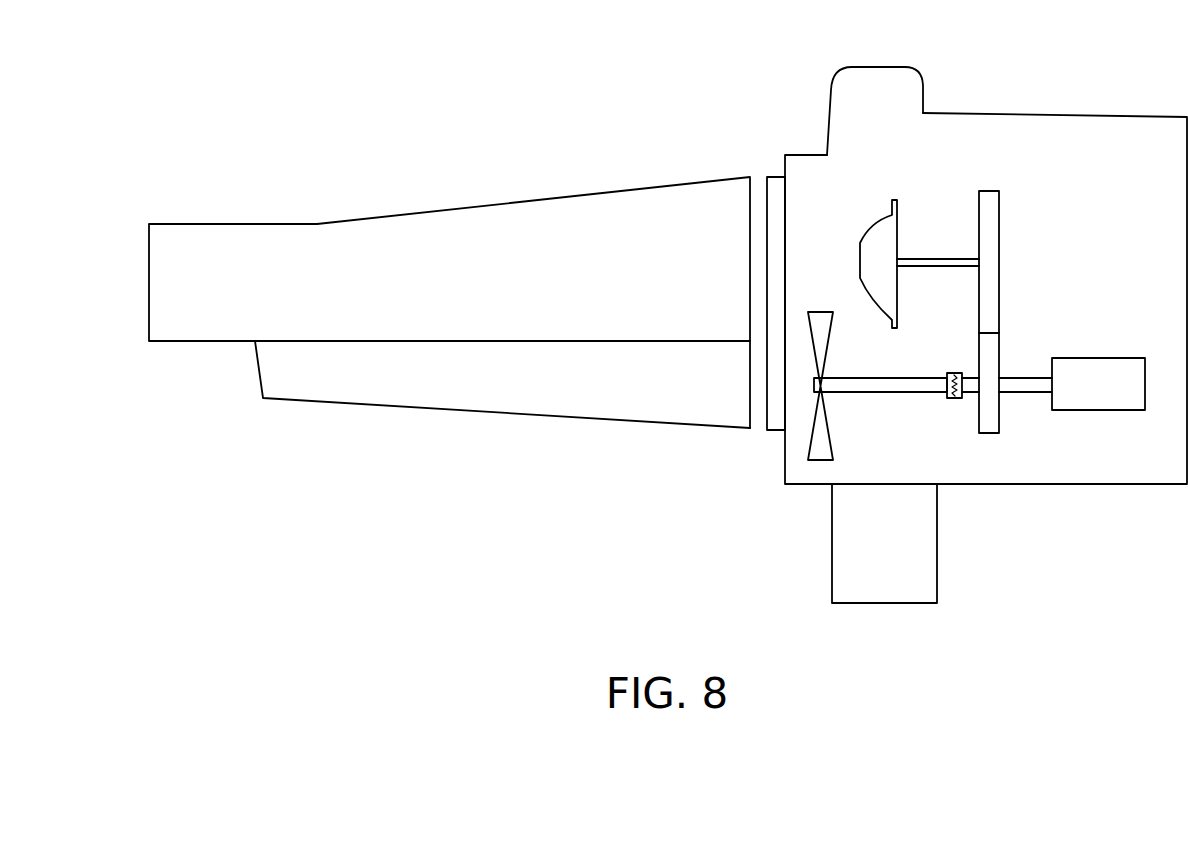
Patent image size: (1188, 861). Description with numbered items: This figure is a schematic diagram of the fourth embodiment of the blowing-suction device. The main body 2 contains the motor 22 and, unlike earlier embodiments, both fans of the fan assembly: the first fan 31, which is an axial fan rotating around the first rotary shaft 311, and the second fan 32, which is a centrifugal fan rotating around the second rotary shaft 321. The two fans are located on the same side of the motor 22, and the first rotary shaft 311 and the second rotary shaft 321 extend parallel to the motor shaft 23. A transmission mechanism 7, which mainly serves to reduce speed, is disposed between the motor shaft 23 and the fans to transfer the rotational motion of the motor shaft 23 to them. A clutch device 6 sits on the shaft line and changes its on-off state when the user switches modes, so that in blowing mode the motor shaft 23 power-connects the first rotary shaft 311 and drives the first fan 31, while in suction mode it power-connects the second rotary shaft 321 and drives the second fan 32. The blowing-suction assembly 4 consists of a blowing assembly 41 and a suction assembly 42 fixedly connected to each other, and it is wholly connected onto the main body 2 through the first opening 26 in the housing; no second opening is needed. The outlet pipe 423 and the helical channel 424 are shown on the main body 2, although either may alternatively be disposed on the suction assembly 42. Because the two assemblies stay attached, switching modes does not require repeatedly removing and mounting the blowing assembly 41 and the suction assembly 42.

The main body 2 is at (1090, 115).
The blowing-suction assembly 4 is at (449, 312).
The clutch device 6 is at (963, 398).
The transmission mechanism 7 is at (990, 398).
The motor 22 is at (1118, 400).
The motor shaft 23 is at (1033, 385).
The first opening 26 is at (778, 207).
The first fan 31 is at (822, 325).
The second fan 32 is at (893, 208).
The blowing assembly 41 is at (317, 380).
The suction assembly 42 is at (327, 248).
The first rotary shaft 311 is at (848, 387).
The second rotary shaft 321 is at (937, 258).
The outlet pipe 423 is at (883, 583).
The helical channel 424 is at (883, 98).